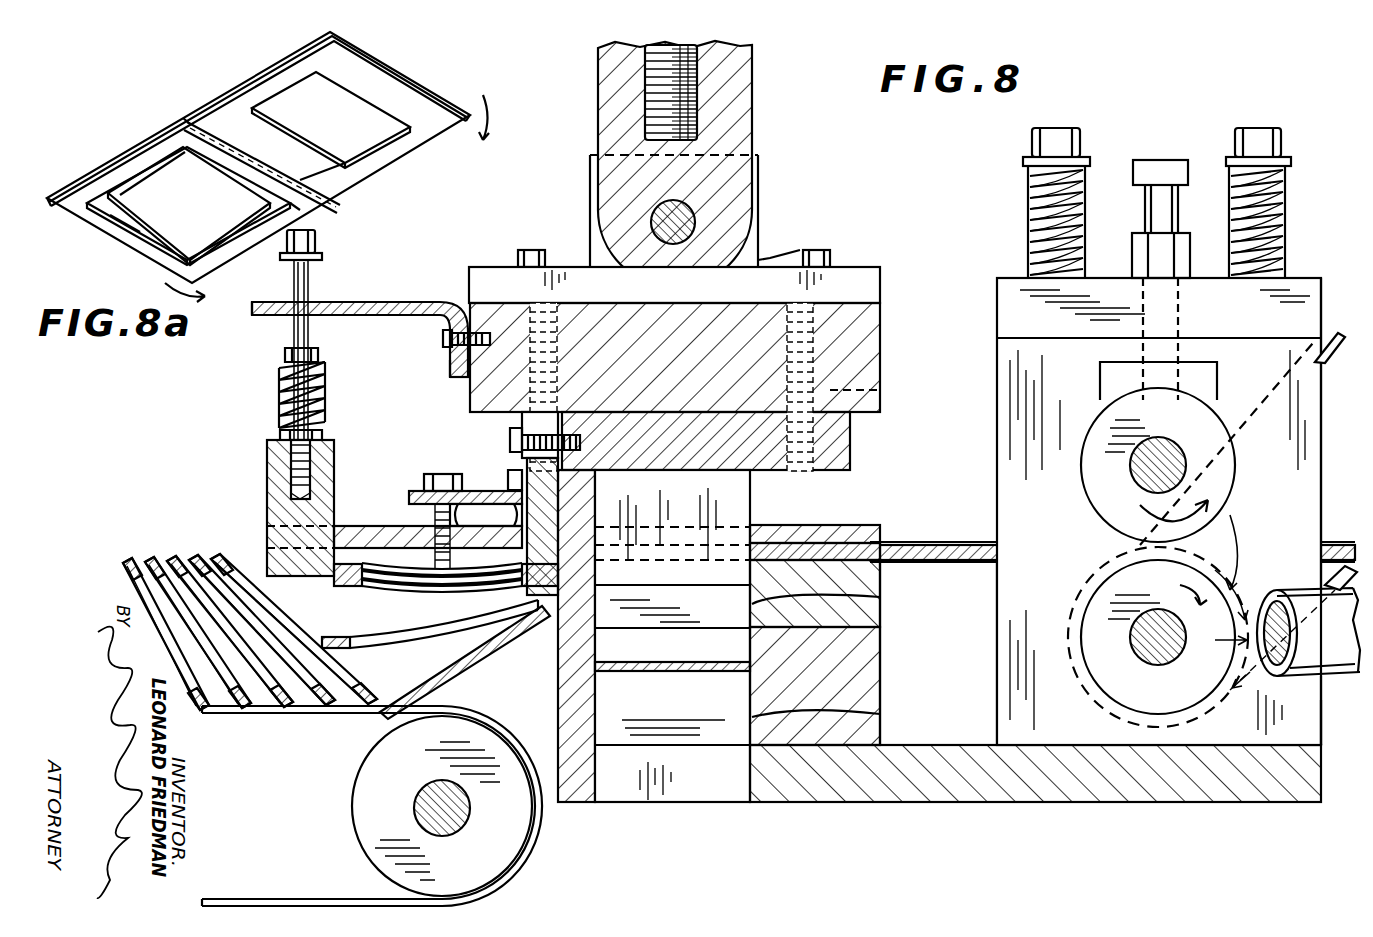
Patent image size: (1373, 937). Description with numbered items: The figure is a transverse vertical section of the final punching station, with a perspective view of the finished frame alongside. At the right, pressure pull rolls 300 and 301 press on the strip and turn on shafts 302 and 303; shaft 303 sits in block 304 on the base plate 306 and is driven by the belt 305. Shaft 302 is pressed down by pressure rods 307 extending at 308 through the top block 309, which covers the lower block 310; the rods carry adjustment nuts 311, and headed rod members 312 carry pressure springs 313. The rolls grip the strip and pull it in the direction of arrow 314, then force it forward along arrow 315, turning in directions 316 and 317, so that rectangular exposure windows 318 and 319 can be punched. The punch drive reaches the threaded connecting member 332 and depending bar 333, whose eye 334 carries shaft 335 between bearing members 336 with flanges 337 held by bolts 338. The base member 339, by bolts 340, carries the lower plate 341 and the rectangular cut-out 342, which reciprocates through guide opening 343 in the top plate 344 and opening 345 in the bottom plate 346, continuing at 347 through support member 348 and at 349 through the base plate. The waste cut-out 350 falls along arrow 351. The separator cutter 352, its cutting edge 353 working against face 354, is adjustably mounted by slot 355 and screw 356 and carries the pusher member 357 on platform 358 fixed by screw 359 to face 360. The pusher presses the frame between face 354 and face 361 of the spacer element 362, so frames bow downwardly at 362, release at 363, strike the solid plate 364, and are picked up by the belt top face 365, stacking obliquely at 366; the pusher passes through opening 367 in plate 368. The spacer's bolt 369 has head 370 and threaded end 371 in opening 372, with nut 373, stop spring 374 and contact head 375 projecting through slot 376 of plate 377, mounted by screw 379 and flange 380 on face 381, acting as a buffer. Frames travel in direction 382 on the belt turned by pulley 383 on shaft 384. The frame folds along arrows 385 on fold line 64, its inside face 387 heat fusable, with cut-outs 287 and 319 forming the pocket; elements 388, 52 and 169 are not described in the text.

In FIG. 8, the upper pressure pull roll 300 is at (1195, 425).
In FIG. 8, the lower pressure pull roll 301 is at (1195, 700).
In FIG. 8, the shaft of upper roller 302 is at (1130, 470).
In FIG. 8, the shaft of lower roller 303 is at (1145, 658).
In FIG. 8, the block 304 is at (1305, 720).
In FIG. 8, the belt 305 is at (1330, 328).
In FIG. 8, the base plate 306 is at (1210, 802).
In FIG. 8, the pressure rods 307 is at (1170, 375).
In FIG. 8, the extension of pressure rod through top block 308 is at (1180, 316).
In FIG. 8, the top block 309 is at (1300, 278).
In FIG. 8, the lower block 310 is at (1305, 425).
In FIG. 8, the adjustment nuts 311 is at (1185, 262).
In FIG. 8, the headed rod members 312 is at (1032, 141).
In FIG. 8, the pressure springs 313 is at (1028, 212).
In FIG. 8, the arrow (direction of pulling strip) 314 is at (1335, 503).
In FIG. 8, the arrow (direction of forward feed) 315 is at (950, 541).
In FIG. 8, the direction of rotation of upper roller 316 is at (1210, 478).
In FIG. 8, the direction of rotation of lower roller 317 is at (1167, 585).
In FIG. 8a, the rectangular exposure frame (window) 318 is at (350, 95).
In FIG. 8a, the rectangular exposure frame (window); blower 319 is at (130, 212).
In FIG. 8, the threaded connecting member 332 is at (700, 42).
In FIG. 8, the depending bar 333 is at (742, 92).
In FIG. 8, the eye 334 is at (752, 168).
In FIG. 8, the shaft 335 is at (696, 218).
In FIG. 8, the bearing members 336 is at (770, 258).
In FIG. 8, the outwardly extending flanges 337 is at (880, 293).
In FIG. 8, the bolts 338 is at (830, 257).
In FIG. 8, the base member 339 is at (880, 350).
In FIG. 8, the screws or bolts 340 is at (880, 391).
In FIG. 8, the lower plate 341 is at (838, 450).
In FIG. 8, the rectangular cut-out (cutting member) 342 is at (752, 492).
In FIG. 8, the guide opening 343 is at (780, 540).
In FIG. 8, the top plate 344 is at (870, 545).
In FIG. 8, the opening in bottom plate 345 is at (880, 597).
In FIG. 8, the bottom plate 346 is at (867, 577).
In FIG. 8, the opening through support member 347 is at (880, 714).
In FIG. 8, the support member 348 is at (868, 664).
In FIG. 8, the opening through base plate 349 is at (750, 795).
In FIG. 8, the cut-out 350 is at (725, 671).
In FIG. 8, the arrow (direction of falling cut-out) 351 is at (669, 733).
In FIG. 8, the separator cutter 352 is at (565, 526).
In FIG. 8, the cutting edge 353 is at (580, 636).
In FIG. 8, the face 354 is at (598, 590).
In FIG. 8, the slot 355 is at (548, 418).
In FIG. 8, the screw 356 is at (590, 470).
In FIG. 8, the adjustable threaded pusher member 357 is at (435, 515).
In FIG. 8, the platform or plate 358 is at (462, 480).
In FIG. 8, the screw 359 is at (508, 478).
In FIG. 8, the face of cutter 360 is at (512, 548).
In FIG. 8, the face of spacer element 361 is at (409, 497).
In FIG. 8, the spacer element; bowed cut-off frame 362 is at (267, 506).
In FIG. 8, the released cut-off frame 363 is at (420, 640).
In FIG. 8, the solid plate 364 is at (500, 660).
In FIG. 8, the top face of belt 365 is at (345, 716).
In FIG. 8, the oblique stack of cut-off frames 366 is at (165, 566).
In FIG. 8, the opening in plate 367 is at (486, 515).
In FIG. 8, the plate 368 is at (295, 578).
In FIG. 8, the bolt member (rod) 369 is at (310, 330).
In FIG. 8, the head 370 is at (315, 253).
In FIG. 8, the lower threaded end 371 is at (291, 452).
In FIG. 8, the opening in spacer block 372 is at (334, 450).
In FIG. 8, the nut 373 is at (322, 432).
In FIG. 8, the stop spring 374 is at (327, 392).
In FIG. 8, the contact head member 375 is at (285, 355).
In FIG. 8, the slot 376 is at (265, 315).
In FIG. 8, the plate 377 is at (428, 302).
In FIG. 8, the screw 379 is at (443, 339).
In FIG. 8, the flange 380 is at (460, 375).
In FIG. 8, the face of block 381 is at (468, 410).
In FIG. 8, the direction of belt travel 382 is at (490, 711).
In FIG. 8, the pulley 383 is at (352, 824).
In FIG. 8, the shaft 384 is at (460, 820).
In FIG. 8a, the arrows (folding direction) 385 is at (490, 120).
In FIG. 8a, the inside face 387 is at (412, 135).
In FIG. 8a, the panel 388 is at (118, 170).
In FIG. 8a, the frame 52 is at (190, 118).
In FIG. 8a, the fold line 64 is at (320, 185).
In FIG. 8a, the edge 169 is at (310, 205).
In FIG. 8a, the rectangular cut-out 287 is at (178, 140).